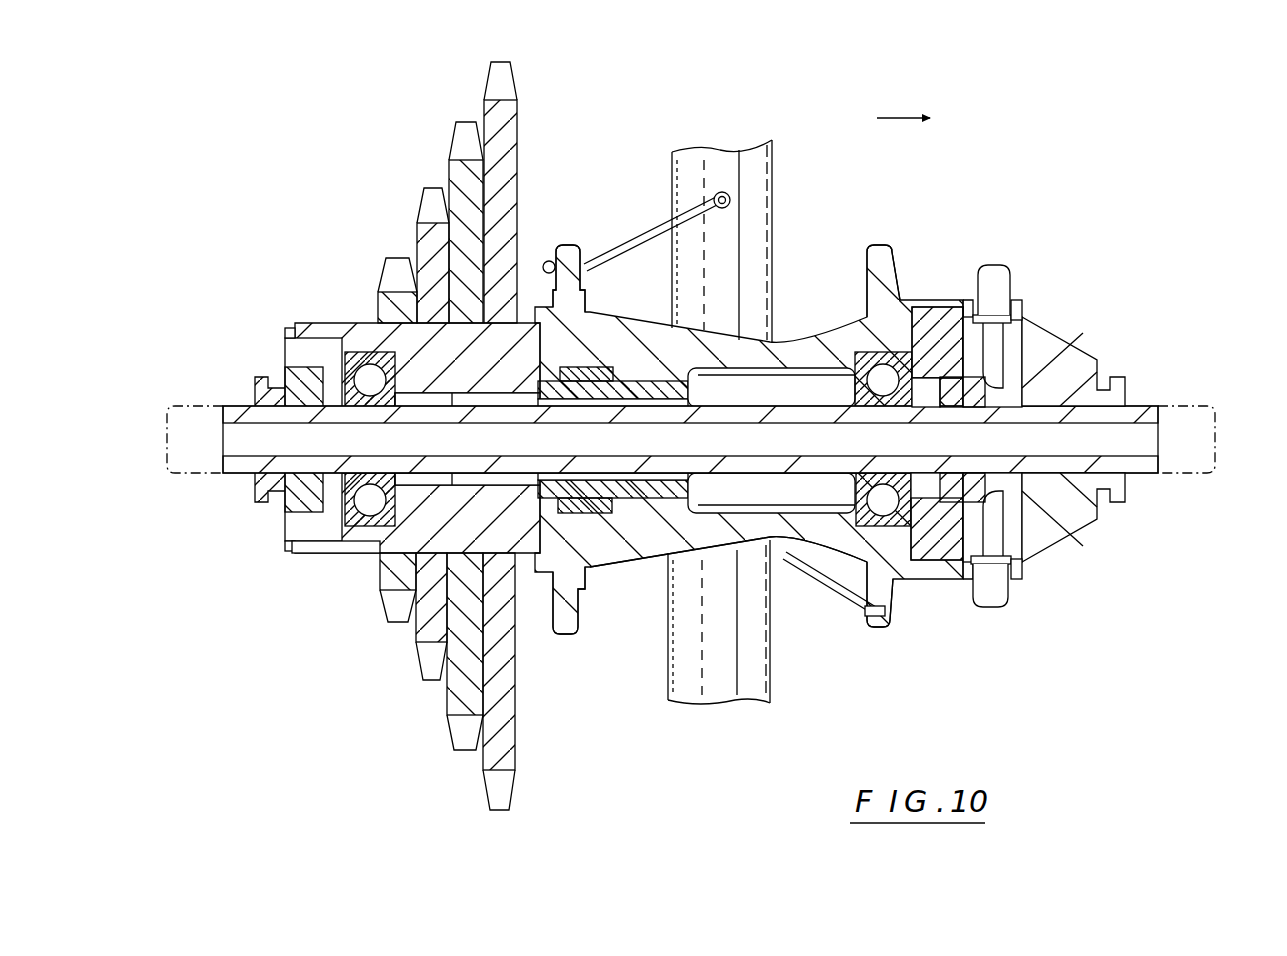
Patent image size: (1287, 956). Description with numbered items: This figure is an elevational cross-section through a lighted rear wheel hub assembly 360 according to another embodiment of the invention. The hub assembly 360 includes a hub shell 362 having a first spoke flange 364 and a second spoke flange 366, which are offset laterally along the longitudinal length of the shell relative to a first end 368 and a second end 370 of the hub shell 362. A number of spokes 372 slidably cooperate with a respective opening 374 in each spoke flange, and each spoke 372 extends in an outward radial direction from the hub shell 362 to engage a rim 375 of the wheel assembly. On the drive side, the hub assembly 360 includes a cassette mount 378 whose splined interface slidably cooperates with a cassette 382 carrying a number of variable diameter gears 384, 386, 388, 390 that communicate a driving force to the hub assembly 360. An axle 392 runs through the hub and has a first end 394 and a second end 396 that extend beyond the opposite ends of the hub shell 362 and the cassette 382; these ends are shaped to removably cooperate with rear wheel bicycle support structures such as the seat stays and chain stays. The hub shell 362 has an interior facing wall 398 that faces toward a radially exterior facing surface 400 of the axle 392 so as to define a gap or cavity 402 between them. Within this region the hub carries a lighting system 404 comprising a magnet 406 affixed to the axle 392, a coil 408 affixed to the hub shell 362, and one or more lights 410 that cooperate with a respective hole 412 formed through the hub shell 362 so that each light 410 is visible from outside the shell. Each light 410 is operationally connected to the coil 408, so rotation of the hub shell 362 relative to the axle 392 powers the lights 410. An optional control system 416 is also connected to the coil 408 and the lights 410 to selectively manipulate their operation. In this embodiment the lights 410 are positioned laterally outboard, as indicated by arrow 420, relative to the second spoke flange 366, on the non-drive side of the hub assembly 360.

The rear wheel hub assembly 360 is at (1075, 80).
The hub shell 362 is at (610, 558).
The first spoke flange 364 is at (567, 636).
The second spoke flange 366 is at (884, 632).
The first end 368 is at (450, 439).
The second end 370 is at (940, 166).
The spoke 372 is at (642, 232).
The opening 374 is at (577, 262).
The rim 375 is at (745, 226).
The cassette mount 378 is at (292, 545).
The cassette 382 is at (300, 556).
The variable diameter gear 384 is at (386, 614).
The variable diameter gear 386 is at (420, 662).
The variable diameter gear 388 is at (455, 738).
The variable diameter gear 390 is at (490, 788).
The axle 392 is at (233, 467).
The first end 394 is at (236, 403).
The second end 396 is at (1152, 414).
The interior facing wall 398 is at (795, 508).
The radially exterior facing surface 400 is at (778, 378).
The cavity 402 is at (936, 490).
The lighting system 404 is at (1038, 422).
The magnet 406 is at (1026, 378).
The coil 408 is at (921, 305).
The light 410 is at (1012, 282).
The hole 412 is at (1020, 302).
The control system 416 is at (969, 292).
The arrow 420 is at (925, 95).